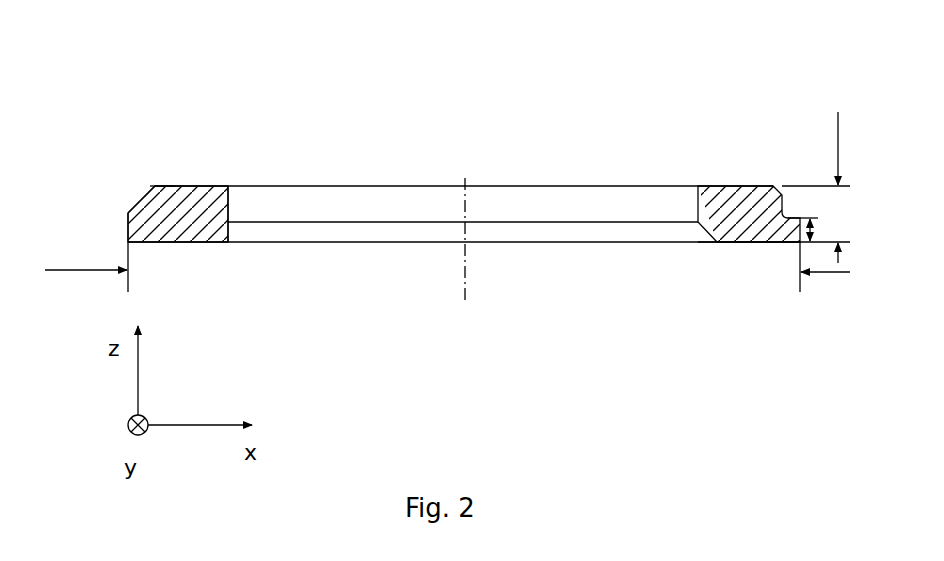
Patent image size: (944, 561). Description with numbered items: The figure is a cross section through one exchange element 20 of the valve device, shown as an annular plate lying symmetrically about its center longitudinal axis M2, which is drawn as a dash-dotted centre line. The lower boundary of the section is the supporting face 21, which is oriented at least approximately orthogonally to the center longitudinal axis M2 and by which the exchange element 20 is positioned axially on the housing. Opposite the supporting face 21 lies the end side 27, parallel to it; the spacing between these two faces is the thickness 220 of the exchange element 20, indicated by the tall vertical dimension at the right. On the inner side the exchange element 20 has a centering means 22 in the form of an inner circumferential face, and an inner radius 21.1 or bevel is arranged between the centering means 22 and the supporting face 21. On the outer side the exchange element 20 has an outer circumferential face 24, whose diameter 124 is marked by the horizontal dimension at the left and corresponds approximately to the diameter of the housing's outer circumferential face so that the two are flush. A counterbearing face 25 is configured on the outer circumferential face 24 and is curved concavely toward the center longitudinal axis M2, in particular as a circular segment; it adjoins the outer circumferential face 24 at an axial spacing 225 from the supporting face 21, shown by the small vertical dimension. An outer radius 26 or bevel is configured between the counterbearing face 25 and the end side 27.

The exchange element 20 is at (516, 100).
The supporting face 21 is at (729, 244).
The inner radius 21.1 is at (215, 234).
The centering means 22 is at (231, 201).
The outer circumferential face 24 is at (126, 233).
The counterbearing face 25 is at (135, 207).
The outer radius 26 is at (150, 187).
The end side 27 is at (739, 185).
The diameter of the outer circumferential face 124 is at (86, 267).
The thickness of the exchange element 220 is at (816, 187).
The spacing of the counterbearing face 225 is at (800, 220).
The center longitudinal axis M2 is at (467, 298).